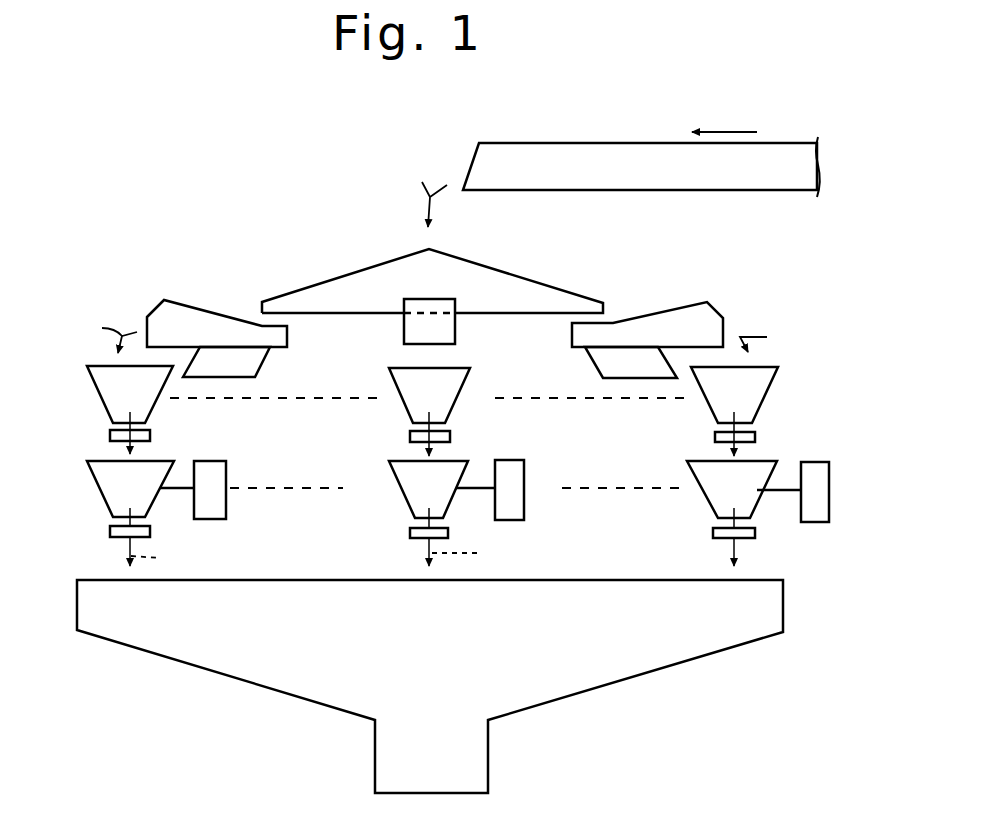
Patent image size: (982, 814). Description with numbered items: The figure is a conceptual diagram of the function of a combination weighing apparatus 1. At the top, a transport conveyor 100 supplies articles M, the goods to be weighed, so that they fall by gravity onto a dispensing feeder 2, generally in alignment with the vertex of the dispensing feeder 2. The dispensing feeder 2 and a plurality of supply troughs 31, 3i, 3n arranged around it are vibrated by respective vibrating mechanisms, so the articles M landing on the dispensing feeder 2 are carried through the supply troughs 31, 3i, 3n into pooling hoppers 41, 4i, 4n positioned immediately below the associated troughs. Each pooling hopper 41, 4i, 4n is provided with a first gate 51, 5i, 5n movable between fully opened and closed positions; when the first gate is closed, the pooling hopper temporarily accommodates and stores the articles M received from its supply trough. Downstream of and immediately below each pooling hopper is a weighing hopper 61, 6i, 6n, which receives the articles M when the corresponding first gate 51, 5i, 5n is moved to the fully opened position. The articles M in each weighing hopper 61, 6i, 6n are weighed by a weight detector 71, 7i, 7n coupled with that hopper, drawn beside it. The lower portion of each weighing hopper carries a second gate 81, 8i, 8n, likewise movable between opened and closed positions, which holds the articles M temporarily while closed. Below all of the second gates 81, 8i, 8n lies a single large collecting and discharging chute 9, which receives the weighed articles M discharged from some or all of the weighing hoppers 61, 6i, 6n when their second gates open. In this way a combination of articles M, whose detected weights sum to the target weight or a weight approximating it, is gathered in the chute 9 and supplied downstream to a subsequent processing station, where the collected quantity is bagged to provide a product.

The combination weighing apparatus 1 is at (253, 210).
The dispensing feeder 2 is at (358, 273).
The supply trough 31 is at (155, 305).
The supply trough 3i is at (455, 342).
The supply trough 3n is at (708, 303).
The pooling hopper 41 is at (92, 382).
The pooling hopper 4i is at (457, 382).
The pooling hopper 4n is at (767, 382).
The first gate 51 is at (110, 435).
The first gate 5i is at (452, 436).
The first gate 5n is at (755, 435).
The weighing hopper 61 is at (97, 486).
The weighing hopper 6i is at (395, 468).
The weighing hopper 6n is at (708, 500).
The weight detector 71 is at (223, 513).
The weight detector 7i is at (520, 510).
The weight detector 7n is at (830, 480).
The second gate 81 is at (108, 532).
The second gate 8i is at (408, 532).
The second gate 8n is at (747, 542).
The collecting and discharging chute 9 is at (702, 657).
The transport conveyor 100 is at (587, 190).
The articles M is at (435, 367).